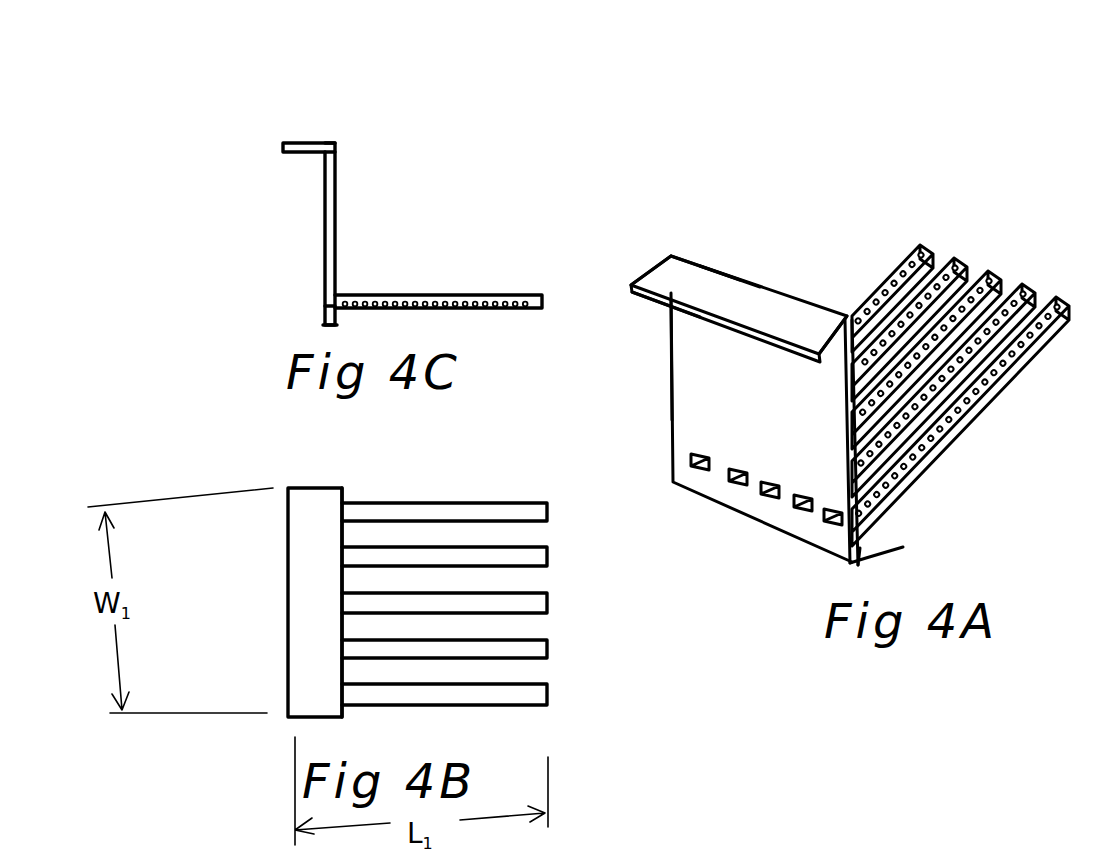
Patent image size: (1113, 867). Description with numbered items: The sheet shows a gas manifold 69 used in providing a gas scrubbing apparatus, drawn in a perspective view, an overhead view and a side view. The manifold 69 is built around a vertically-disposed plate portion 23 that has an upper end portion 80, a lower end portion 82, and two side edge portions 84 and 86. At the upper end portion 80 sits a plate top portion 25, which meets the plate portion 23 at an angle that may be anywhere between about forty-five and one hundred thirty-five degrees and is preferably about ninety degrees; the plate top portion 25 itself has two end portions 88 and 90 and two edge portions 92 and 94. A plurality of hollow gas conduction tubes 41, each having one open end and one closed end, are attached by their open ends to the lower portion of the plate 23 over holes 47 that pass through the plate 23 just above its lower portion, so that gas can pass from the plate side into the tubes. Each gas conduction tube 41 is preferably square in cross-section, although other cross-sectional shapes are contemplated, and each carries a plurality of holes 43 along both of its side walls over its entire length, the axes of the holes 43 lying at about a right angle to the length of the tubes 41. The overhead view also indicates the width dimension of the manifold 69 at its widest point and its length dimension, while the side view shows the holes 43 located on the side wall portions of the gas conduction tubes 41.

In FIG. 4A, the plate portion 23 is at (693, 395).
In FIG. 4B, the plate portion 23 is at (347, 537).
In FIG. 4C, the plate portion 23 is at (323, 208).
In FIG. 4A, the plate top portion 25 is at (668, 283).
In FIG. 4B, the plate top portion 25 is at (315, 592).
In FIG. 4C, the plate top portion 25 is at (308, 143).
In FIG. 4A, the gas conduction tubes 41 is at (1062, 300).
In FIG. 4B, the gas conduction tubes 41 is at (545, 510).
In FIG. 4C, the gas conduction tubes 41 is at (494, 298).
In FIG. 4A, the holes 43 is at (863, 293).
In FIG. 4B, the holes 43 is at (465, 595).
In FIG. 4C, the holes 43 is at (465, 298).
In FIG. 4A, the holes 47 is at (735, 485).
In FIG. 4C, the holes 47 is at (325, 306).
In FIG. 4A, the gas manifold 69 is at (836, 178).
In FIG. 4B, the gas manifold 69 is at (275, 434).
In FIG. 4C, the gas manifold 69 is at (442, 153).
In FIG. 4A, the upper end portion 80 is at (674, 257).
In FIG. 4C, the upper end portion 80 is at (334, 145).
In FIG. 4A, the lower end portion 82 is at (858, 558).
In FIG. 4C, the lower end portion 82 is at (330, 322).
In FIG. 4A, the side edge portion 84 is at (672, 345).
In FIG. 4A, the side edge portion 86 is at (853, 488).
In FIG. 4A, the end portion 88 is at (645, 272).
In FIG. 4A, the end portion 90 is at (818, 347).
In FIG. 4A, the edge portion 92 is at (640, 293).
In FIG. 4A, the edge portion 94 is at (722, 267).